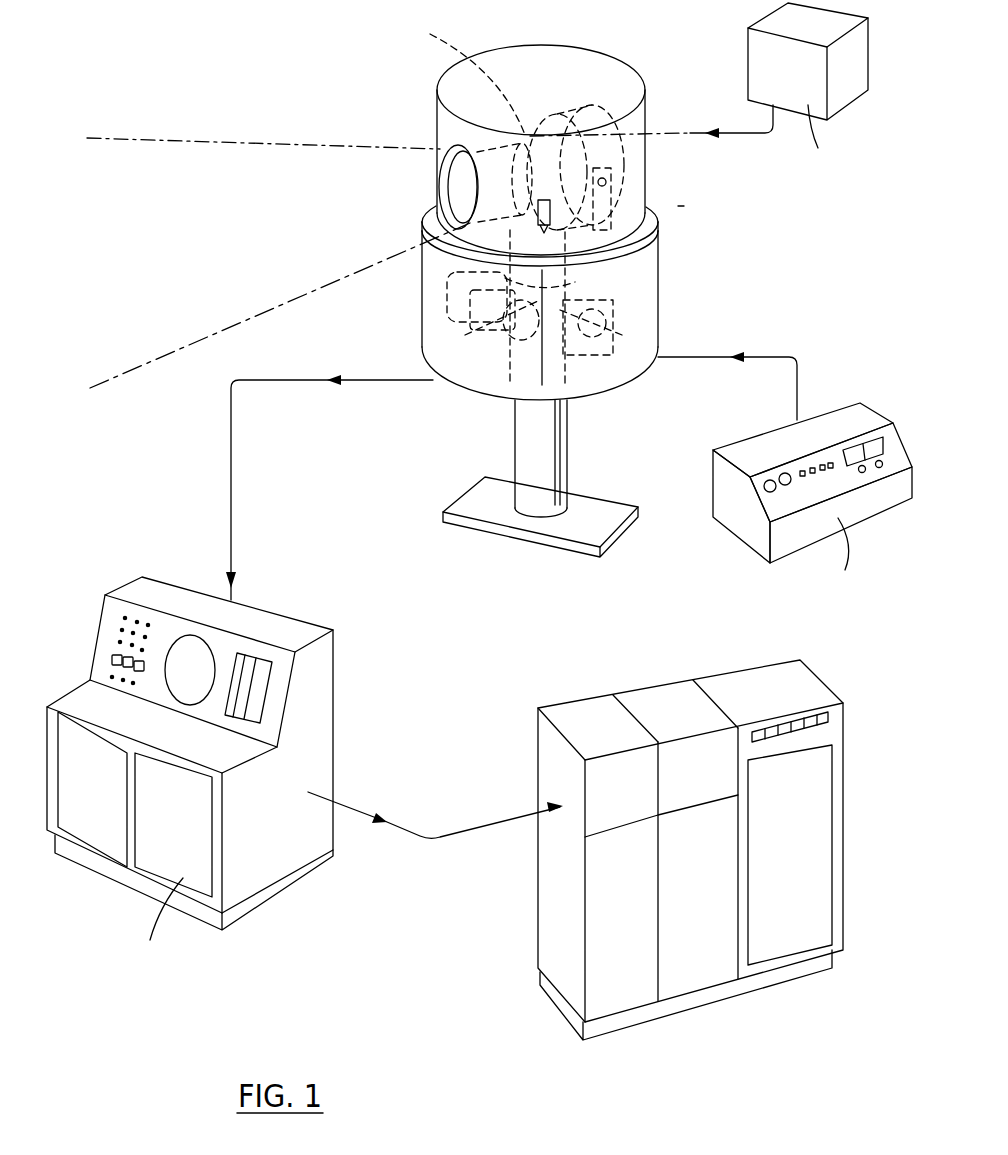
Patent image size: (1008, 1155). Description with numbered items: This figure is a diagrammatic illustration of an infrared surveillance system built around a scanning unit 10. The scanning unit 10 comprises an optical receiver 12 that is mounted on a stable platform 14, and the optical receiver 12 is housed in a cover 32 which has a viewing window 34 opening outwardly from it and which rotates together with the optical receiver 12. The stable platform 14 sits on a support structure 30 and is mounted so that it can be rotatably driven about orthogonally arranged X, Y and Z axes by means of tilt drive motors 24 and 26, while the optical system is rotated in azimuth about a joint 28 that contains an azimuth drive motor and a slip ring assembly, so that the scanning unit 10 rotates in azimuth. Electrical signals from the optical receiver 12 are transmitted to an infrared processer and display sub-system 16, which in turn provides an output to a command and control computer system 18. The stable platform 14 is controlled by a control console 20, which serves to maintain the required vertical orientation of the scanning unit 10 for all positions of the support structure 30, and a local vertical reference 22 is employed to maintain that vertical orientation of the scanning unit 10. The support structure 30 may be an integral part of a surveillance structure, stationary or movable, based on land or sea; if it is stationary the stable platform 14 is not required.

The scanning unit 10 is at (428, 128).
The optical receiver 12 is at (562, 130).
The stable platform 14 is at (642, 206).
The infrared processer and display sub-system 16 is at (278, 617).
The command and control computer system 18 is at (578, 690).
The control console 20 is at (746, 420).
The local vertical reference 22 is at (741, 70).
The tilt drive motor 24 is at (445, 312).
The tilt drive motor 26 is at (588, 297).
The joint 28 is at (578, 280).
The support structure 30 is at (568, 441).
The cover 32 is at (622, 68).
The viewing window 34 is at (440, 178).